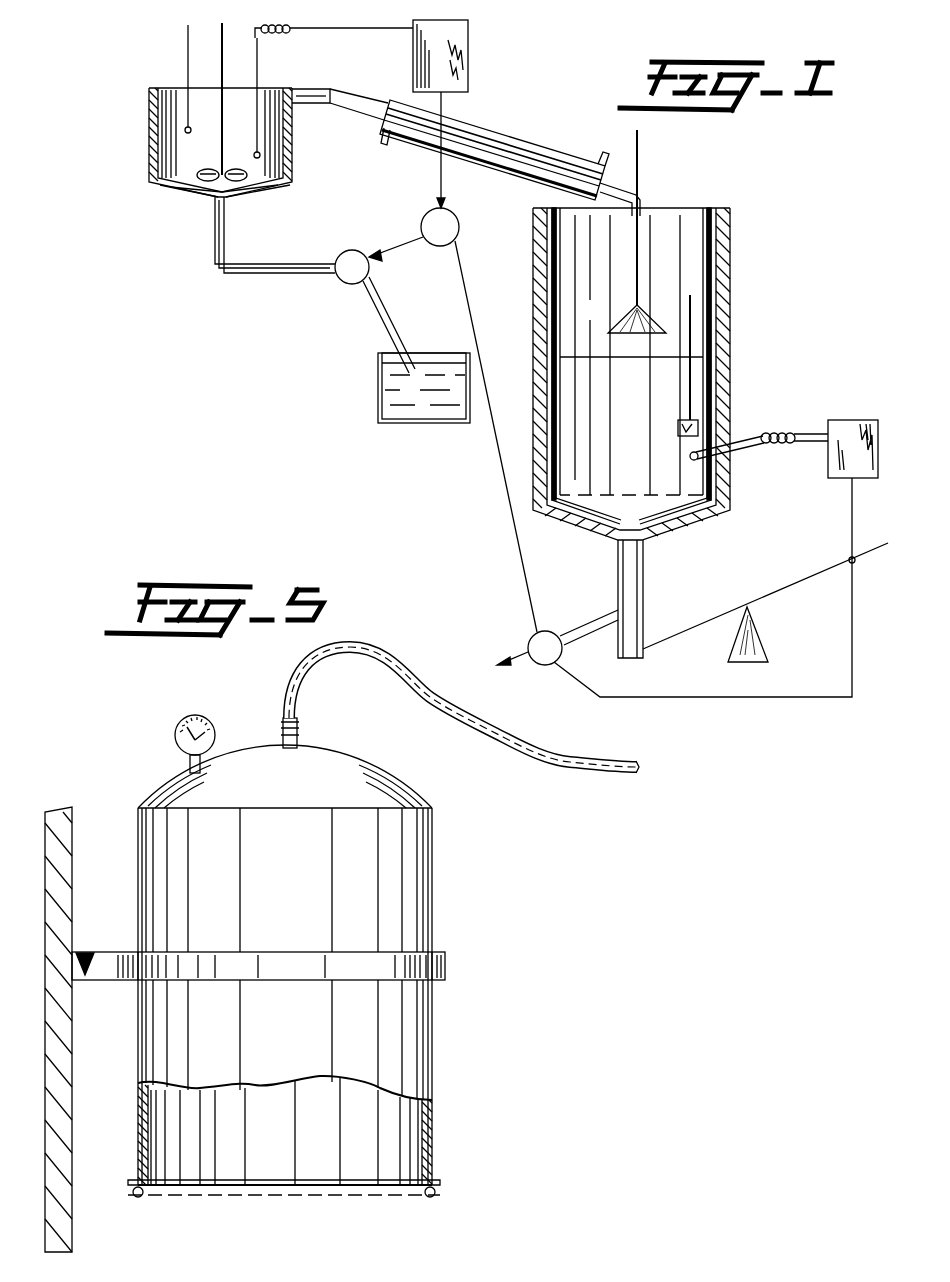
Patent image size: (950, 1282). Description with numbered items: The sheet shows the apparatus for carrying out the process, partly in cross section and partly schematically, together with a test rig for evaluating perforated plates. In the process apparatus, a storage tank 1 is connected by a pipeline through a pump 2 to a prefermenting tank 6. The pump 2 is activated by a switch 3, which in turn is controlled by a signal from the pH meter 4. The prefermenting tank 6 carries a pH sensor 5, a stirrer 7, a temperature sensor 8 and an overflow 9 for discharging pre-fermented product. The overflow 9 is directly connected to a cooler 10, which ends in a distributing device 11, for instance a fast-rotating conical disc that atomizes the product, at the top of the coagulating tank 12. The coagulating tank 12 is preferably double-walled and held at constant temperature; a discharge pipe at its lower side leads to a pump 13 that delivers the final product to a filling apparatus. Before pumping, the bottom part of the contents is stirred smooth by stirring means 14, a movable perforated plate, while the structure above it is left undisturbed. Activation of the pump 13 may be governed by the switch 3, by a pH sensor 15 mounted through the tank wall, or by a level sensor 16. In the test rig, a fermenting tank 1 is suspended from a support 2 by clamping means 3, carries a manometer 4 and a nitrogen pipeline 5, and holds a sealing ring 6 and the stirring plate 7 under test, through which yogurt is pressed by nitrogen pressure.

In FIG. 1, the storage tank 1 is at (393, 392).
In FIG. 5, the storage tank 1 is at (383, 916).
In FIG. 1, the pump 2 is at (342, 266).
In FIG. 5, the pump 2 is at (60, 1197).
In FIG. 1, the switch 3 is at (443, 223).
In FIG. 5, the switch 3 is at (108, 965).
In FIG. 1, the pH meter 4 is at (450, 55).
In FIG. 5, the pH meter 4 is at (210, 737).
In FIG. 1, the pH sensor 5 is at (257, 47).
In FIG. 5, the pH sensor 5 is at (440, 702).
In FIG. 1, the prefermenting tank 6 is at (158, 140).
In FIG. 5, the prefermenting tank 6 is at (138, 1198).
In FIG. 1, the stirrer 7 is at (222, 47).
In FIG. 5, the stirrer 7 is at (268, 1198).
In FIG. 1, the temperature sensor 8 is at (188, 47).
In FIG. 1, the overflow 9 is at (310, 104).
In FIG. 1, the cooler 10 is at (527, 160).
In FIG. 1, the distributing device 11 is at (670, 228).
In FIG. 1, the coagulating tank 12 is at (714, 212).
In FIG. 1, the pump 13 is at (548, 638).
In FIG. 1, the stirring means 14 is at (670, 515).
In FIG. 1, the pH sensor 15 is at (748, 436).
In FIG. 1, the level sensor 16 is at (691, 392).